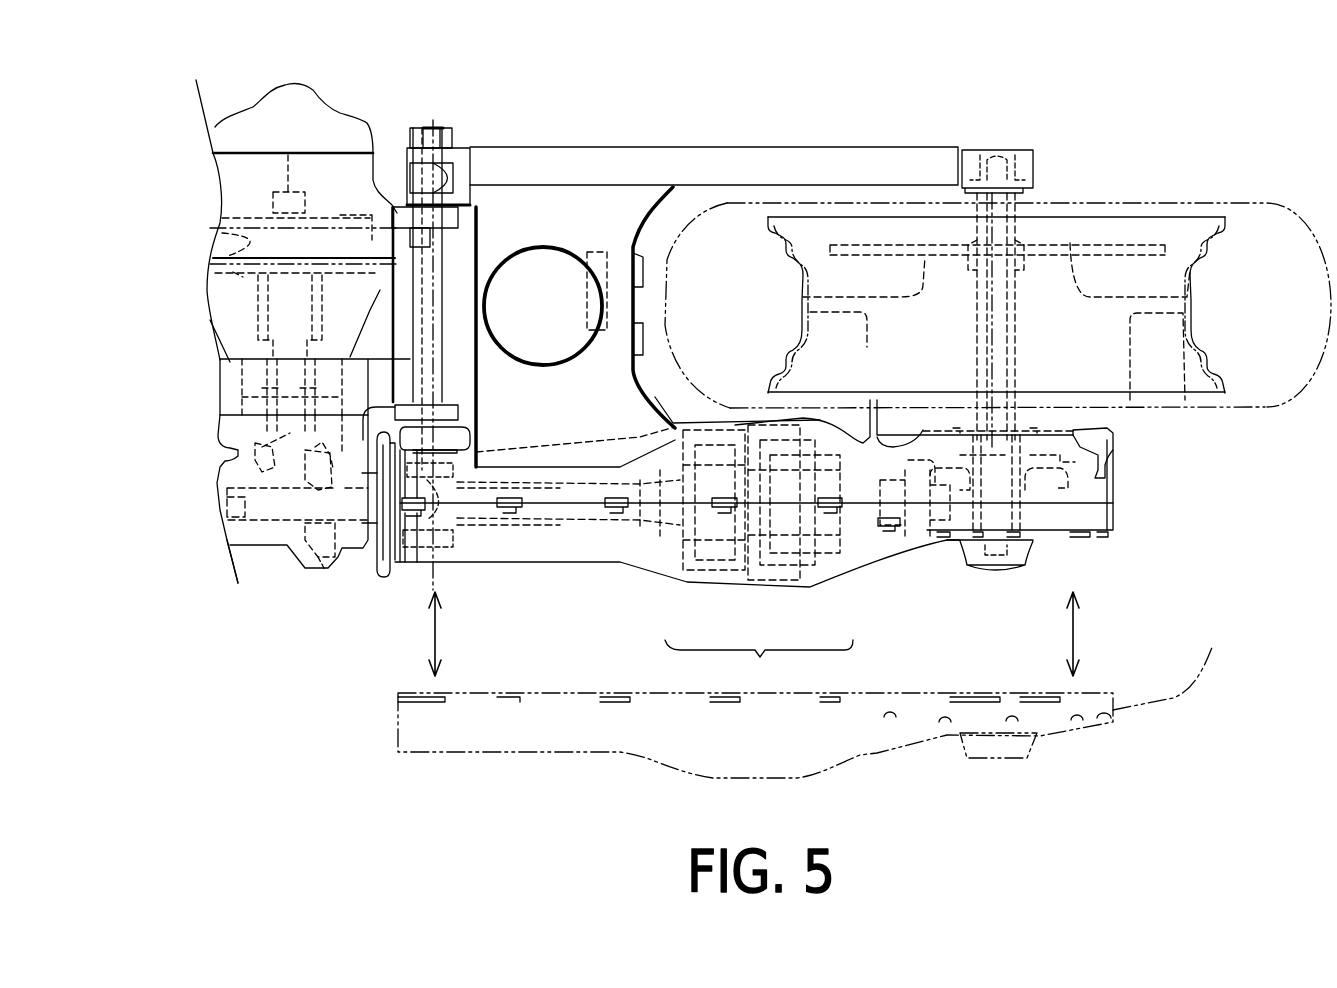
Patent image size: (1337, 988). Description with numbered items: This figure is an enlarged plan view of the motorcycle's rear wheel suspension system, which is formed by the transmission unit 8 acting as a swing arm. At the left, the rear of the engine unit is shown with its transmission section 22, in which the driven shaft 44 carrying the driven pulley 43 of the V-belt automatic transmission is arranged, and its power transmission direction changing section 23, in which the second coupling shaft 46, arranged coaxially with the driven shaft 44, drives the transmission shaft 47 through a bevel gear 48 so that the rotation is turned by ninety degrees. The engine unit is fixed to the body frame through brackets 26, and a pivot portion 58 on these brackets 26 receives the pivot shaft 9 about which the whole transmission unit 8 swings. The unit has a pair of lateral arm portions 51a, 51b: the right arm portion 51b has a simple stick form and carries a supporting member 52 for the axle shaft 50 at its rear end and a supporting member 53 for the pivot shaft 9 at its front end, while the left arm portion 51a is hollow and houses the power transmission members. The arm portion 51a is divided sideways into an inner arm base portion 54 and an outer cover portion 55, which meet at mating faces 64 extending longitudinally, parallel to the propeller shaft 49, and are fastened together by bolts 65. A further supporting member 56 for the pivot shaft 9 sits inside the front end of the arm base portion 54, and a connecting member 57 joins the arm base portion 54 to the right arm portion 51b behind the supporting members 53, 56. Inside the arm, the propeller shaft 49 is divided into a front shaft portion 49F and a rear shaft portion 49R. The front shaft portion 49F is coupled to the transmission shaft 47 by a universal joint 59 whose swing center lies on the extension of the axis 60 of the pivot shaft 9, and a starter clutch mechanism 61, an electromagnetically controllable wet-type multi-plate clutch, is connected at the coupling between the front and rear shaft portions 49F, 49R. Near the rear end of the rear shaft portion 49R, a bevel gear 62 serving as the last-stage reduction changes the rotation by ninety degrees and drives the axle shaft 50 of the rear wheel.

The transmission unit 8 is at (545, 563).
The pivot shaft 9 is at (483, 302).
The transmission section 22 is at (342, 115).
The power transmission direction changing section 23 is at (273, 548).
The brackets 26 is at (448, 213).
The driven pulley 43 is at (343, 200).
The driven shaft 44 is at (288, 150).
The second coupling shaft 46 is at (260, 438).
The transmission shaft 47 is at (273, 510).
The bevel gear 48 is at (325, 570).
The propeller shaft 49 is at (736, 556).
The front shaft portion 49F is at (620, 568).
The rear shaft portion 49R is at (850, 548).
The axle shaft 50 is at (990, 308).
The arm portion 51a is at (575, 563).
The arm portion 51b is at (768, 162).
The supporting member 52 is at (992, 153).
The supporting member 53 is at (455, 150).
The arm base portion 54 is at (1107, 485).
The cover portion 55 is at (1123, 503).
The supporting member 56 is at (465, 445).
The connecting member 57 is at (587, 210).
The pivot portion 58 is at (483, 245).
The universal joint 59 is at (417, 550).
The axis of the pivot shaft 60 is at (433, 555).
The starter clutch mechanism 61 is at (727, 427).
The bevel gear 62 is at (916, 485).
The mating faces 64 is at (1105, 517).
The bolts 65 is at (507, 520).